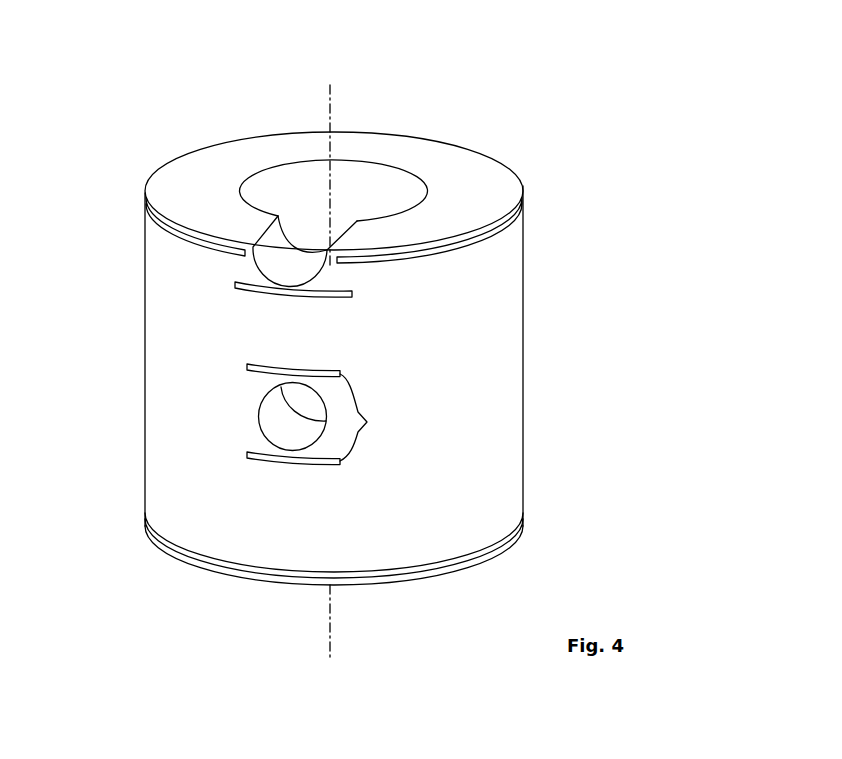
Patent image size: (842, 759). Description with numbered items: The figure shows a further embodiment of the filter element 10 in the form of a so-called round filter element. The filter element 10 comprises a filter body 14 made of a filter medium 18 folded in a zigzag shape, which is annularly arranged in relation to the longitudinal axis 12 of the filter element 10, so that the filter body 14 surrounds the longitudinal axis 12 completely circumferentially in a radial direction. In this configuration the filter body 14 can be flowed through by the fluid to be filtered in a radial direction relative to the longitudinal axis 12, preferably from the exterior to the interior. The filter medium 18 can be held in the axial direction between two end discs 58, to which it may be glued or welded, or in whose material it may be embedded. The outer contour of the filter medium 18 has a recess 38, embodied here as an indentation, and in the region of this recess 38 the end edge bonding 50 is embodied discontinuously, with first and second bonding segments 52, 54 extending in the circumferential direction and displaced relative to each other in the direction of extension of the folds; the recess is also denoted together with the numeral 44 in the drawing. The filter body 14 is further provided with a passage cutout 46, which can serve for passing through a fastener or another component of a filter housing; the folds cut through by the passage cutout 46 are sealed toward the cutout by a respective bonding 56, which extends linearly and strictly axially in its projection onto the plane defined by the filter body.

The filter element 10 is at (575, 134).
The longitudinal axis 12 is at (330, 113).
The filter body 14 is at (526, 309).
The filter medium 18 is at (510, 443).
The recess 38 is at (301, 234).
The opening 44 is at (302, 234).
The passage cutout 46 is at (271, 412).
The end edge bonding 50 is at (138, 198).
The first bonding segment 52 is at (213, 250).
The second bonding segment 54 is at (262, 290).
The bonding 56 is at (320, 414).
The end discs 58 is at (462, 168).